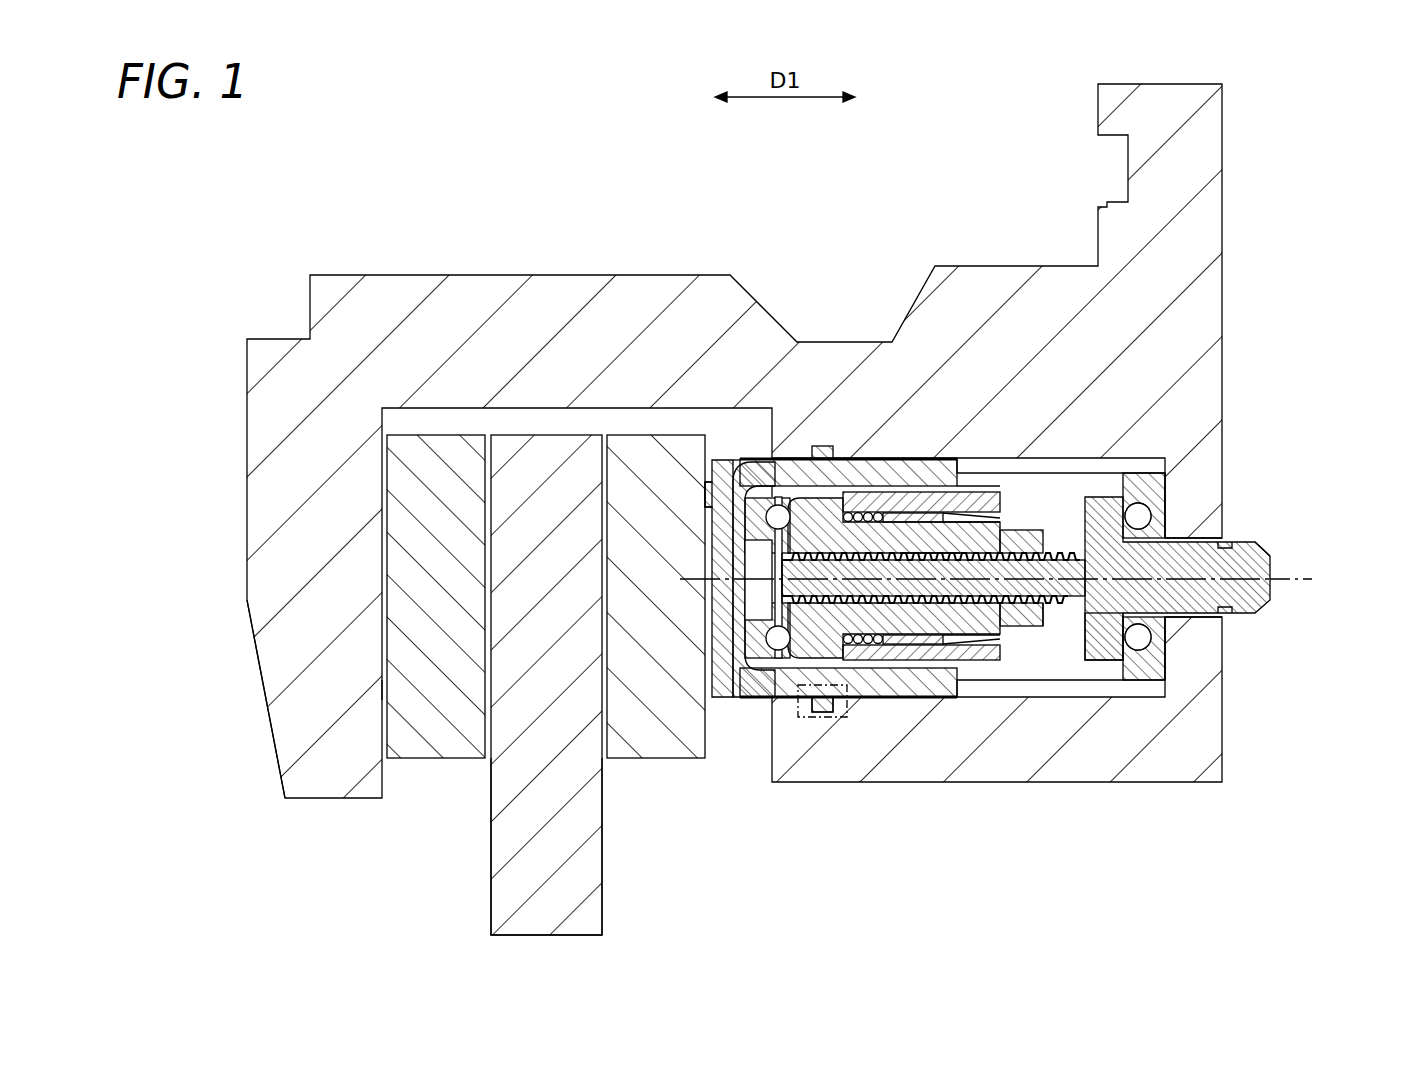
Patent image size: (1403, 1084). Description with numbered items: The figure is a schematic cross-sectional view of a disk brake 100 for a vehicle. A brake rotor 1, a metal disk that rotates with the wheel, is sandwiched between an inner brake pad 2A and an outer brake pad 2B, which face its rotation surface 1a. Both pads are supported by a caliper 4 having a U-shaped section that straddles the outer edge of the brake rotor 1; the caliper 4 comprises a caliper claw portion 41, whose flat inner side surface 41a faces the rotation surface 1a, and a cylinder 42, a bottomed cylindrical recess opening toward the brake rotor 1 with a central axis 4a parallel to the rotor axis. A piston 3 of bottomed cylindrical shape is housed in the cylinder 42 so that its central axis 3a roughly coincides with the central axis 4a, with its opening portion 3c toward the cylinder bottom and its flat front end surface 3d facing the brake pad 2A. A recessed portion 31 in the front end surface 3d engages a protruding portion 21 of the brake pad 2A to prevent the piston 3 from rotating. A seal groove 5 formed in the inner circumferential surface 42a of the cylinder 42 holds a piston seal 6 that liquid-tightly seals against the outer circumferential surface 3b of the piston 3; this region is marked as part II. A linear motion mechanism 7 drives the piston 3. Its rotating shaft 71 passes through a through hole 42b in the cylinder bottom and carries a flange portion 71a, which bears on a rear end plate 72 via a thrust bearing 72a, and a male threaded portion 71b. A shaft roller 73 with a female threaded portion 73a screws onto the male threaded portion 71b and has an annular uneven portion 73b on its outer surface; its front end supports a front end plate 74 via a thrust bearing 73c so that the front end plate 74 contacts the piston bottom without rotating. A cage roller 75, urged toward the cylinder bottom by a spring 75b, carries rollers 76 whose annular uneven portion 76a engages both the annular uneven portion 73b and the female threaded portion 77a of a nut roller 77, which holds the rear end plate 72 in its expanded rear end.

The disk brake 100 is at (395, 158).
The brake rotor 1 is at (540, 435).
The rotation surface 1a is at (491, 893).
The brake pad 2A is at (640, 435).
The brake pad 2B is at (432, 435).
The piston 3 is at (757, 690).
The central axis 3a is at (1298, 582).
The outer circumferential surface 3b is at (793, 460).
The opening portion 3c is at (965, 486).
The front end surface 3d is at (713, 640).
The caliper 4 is at (600, 275).
The central axis 4a is at (1290, 586).
The seal groove 5 is at (830, 697).
The piston seal 6 is at (822, 712).
The linear motion mechanism 7 is at (885, 482).
The protruding portion 21 is at (734, 466).
The recessed portion 31 is at (708, 482).
The caliper claw portion 41 is at (285, 662).
The inner side surface 41a is at (382, 690).
The cylinder 42 is at (1062, 455).
The inner circumferential surface 42a is at (1065, 456).
The through hole 42b is at (1185, 542).
The rotating shaft 71 is at (1268, 592).
The flange portion 71a is at (1105, 668).
The male threaded portion 71b is at (930, 542).
The rear end plate 72 is at (1152, 642).
The thrust bearing 72a is at (1138, 665).
The shaft roller 73 is at (820, 517).
The female threaded portion 73a is at (870, 663).
The annular uneven portion 73b is at (1005, 668).
The thrust bearing 73c is at (770, 490).
The front end plate 74 is at (748, 665).
The cage roller 75 is at (897, 655).
The spring 75b is at (862, 645).
The roller 76 is at (1000, 640).
The annular uneven portion 76a is at (1040, 630).
The nut roller 77 is at (1022, 498).
The female threaded portion 77a is at (1142, 650).
The part II is at (800, 717).